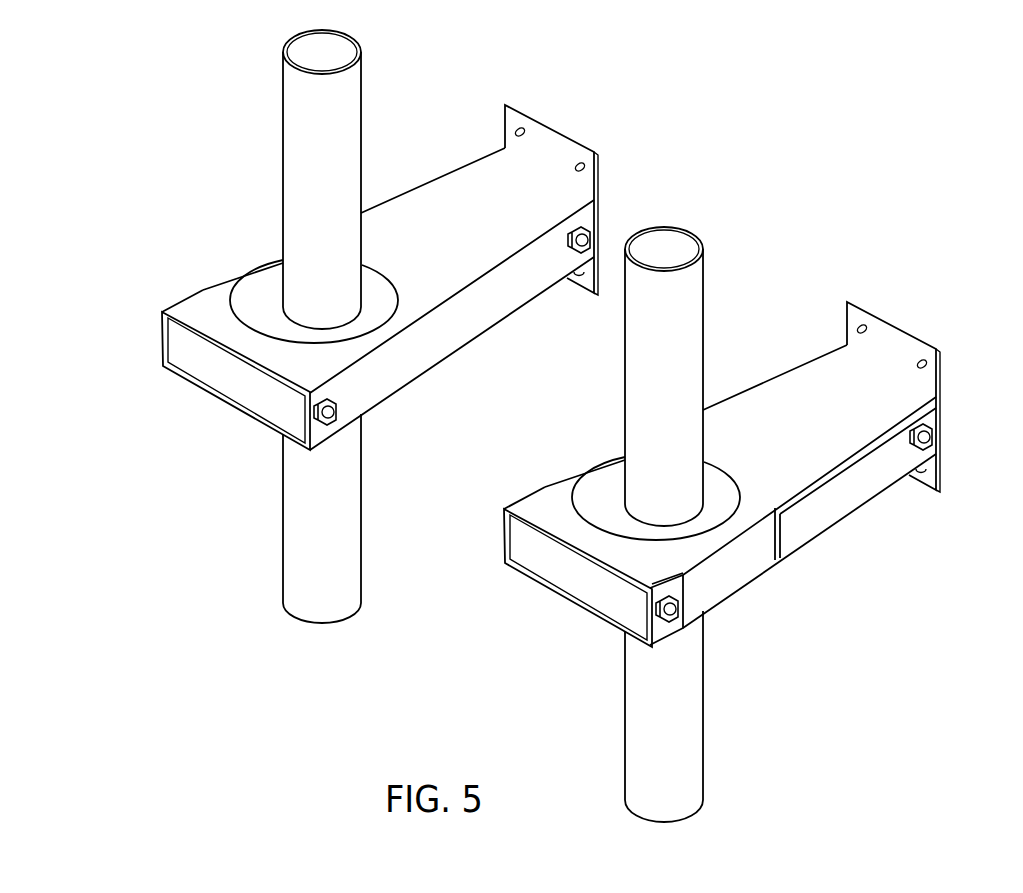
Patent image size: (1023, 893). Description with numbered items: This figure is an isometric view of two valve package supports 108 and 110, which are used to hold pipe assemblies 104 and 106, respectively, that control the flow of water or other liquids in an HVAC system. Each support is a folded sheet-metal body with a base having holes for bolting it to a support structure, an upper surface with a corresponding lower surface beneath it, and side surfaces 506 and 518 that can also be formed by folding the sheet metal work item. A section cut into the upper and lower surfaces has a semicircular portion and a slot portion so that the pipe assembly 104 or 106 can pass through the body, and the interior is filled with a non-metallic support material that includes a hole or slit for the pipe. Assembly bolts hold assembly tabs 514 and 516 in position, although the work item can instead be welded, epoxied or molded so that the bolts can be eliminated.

The pipe assembly 104 is at (283, 555).
The pipe assembly 106 is at (627, 752).
The valve package support 108 is at (612, 86).
The valve package support 110 is at (950, 283).
The side surface 506 is at (470, 325).
The assembly tab 514 is at (852, 500).
The assembly tab 516 is at (662, 633).
The side surface 518 is at (747, 562).